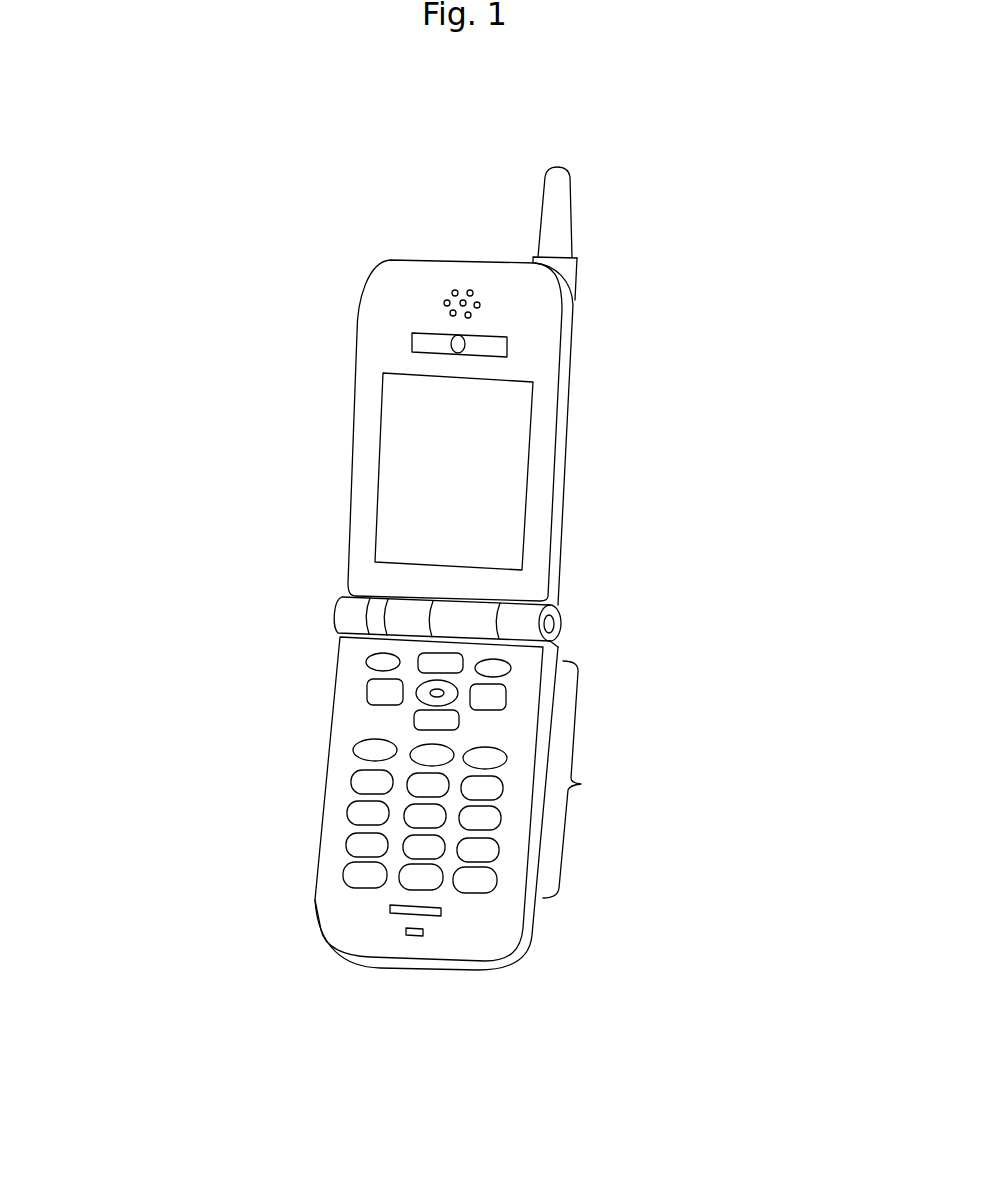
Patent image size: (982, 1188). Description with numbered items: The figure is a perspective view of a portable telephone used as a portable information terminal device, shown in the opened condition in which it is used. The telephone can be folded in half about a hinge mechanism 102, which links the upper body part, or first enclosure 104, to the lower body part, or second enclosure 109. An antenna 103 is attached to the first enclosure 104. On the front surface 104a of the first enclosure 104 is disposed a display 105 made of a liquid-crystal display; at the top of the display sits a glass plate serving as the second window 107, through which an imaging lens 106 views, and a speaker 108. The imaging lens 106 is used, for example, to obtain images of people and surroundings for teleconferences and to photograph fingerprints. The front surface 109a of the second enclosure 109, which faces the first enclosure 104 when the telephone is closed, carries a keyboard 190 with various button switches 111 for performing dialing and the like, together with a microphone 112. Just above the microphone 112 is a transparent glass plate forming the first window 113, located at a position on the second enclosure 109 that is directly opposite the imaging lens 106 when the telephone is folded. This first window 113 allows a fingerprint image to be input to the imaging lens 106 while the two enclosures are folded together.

The hinge mechanism 102 is at (556, 620).
The antenna 103 is at (560, 205).
The first enclosure 104 is at (547, 420).
The front surface of the first enclosure 104a is at (542, 497).
The display 105 is at (388, 467).
The imaging lens 106 is at (449, 335).
The second window 107 is at (503, 342).
The speaker 108 is at (455, 290).
The second enclosure 109 is at (337, 733).
The front surface of the second enclosure 109a is at (500, 913).
The button switches 111 is at (588, 779).
The microphone 112 is at (407, 930).
The first window 113 is at (433, 917).
The keyboard 190 is at (336, 794).